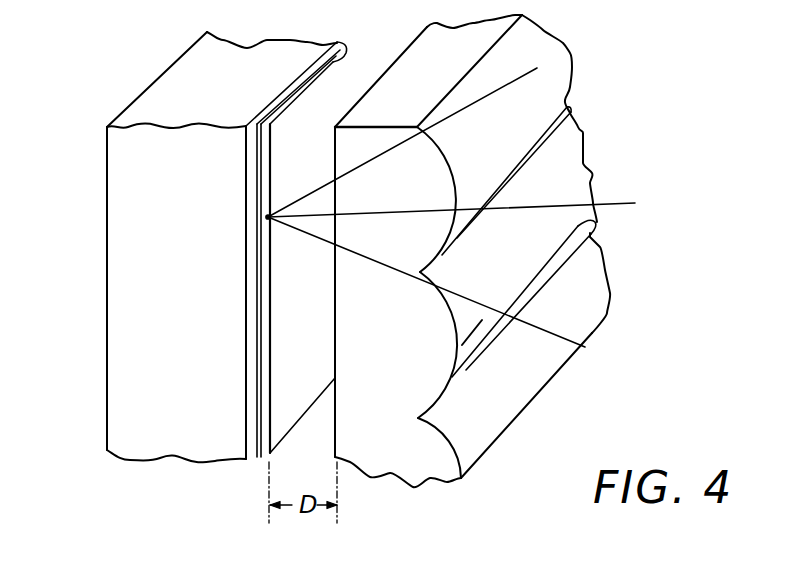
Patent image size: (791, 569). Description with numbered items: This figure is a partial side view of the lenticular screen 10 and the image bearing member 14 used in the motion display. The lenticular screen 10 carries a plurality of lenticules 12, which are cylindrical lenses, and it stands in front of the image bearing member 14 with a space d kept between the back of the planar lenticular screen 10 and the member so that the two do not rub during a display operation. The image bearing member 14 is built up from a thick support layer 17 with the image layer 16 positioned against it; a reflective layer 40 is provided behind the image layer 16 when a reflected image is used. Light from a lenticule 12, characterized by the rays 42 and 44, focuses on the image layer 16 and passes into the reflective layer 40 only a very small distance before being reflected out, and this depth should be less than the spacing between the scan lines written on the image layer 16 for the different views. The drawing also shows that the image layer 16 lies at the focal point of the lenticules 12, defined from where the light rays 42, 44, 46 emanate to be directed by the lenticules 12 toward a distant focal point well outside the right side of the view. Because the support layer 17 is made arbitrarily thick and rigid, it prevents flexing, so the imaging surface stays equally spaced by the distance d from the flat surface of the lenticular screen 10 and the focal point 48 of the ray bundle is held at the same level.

The lenticular screen 10 is at (433, 483).
The lenticule 12 is at (450, 157).
The image bearing member 14 is at (172, 451).
The image layer 16 is at (354, 107).
The support layer 17 is at (127, 375).
The reflective layer 40 is at (255, 458).
The light ray 42 is at (585, 347).
The light ray 44 is at (537, 68).
The light ray 46 is at (635, 203).
The focal point 48 is at (268, 217).